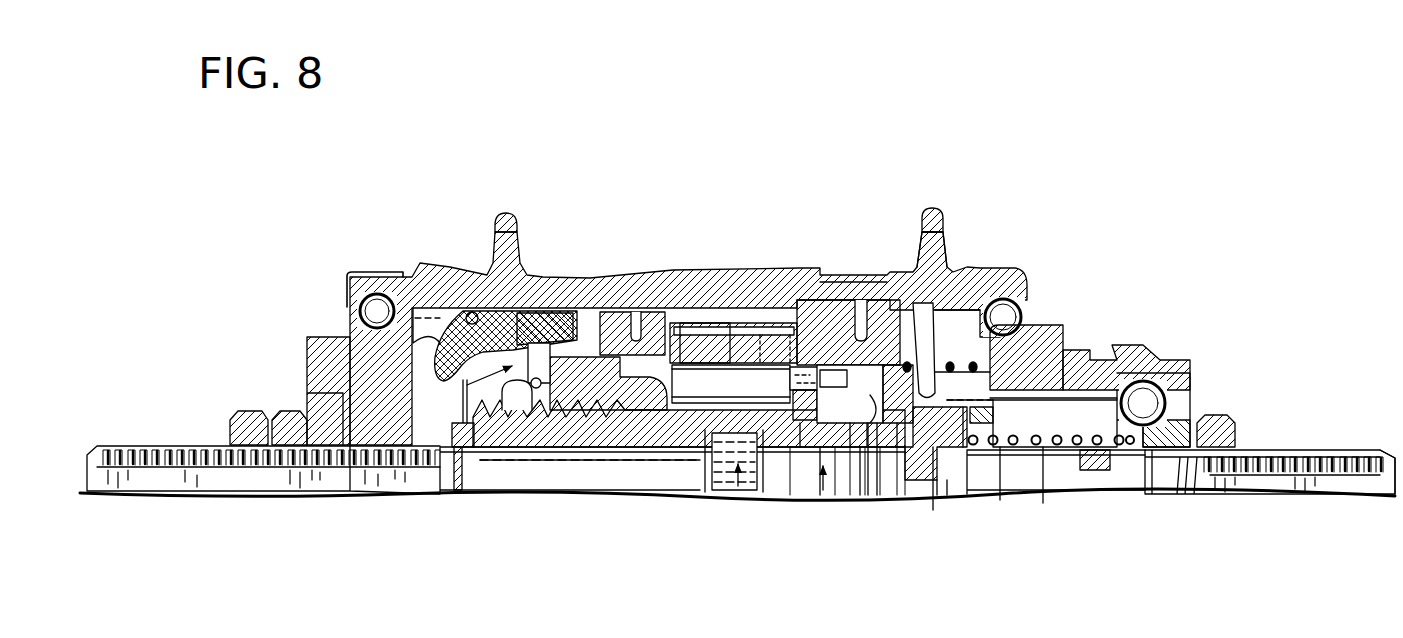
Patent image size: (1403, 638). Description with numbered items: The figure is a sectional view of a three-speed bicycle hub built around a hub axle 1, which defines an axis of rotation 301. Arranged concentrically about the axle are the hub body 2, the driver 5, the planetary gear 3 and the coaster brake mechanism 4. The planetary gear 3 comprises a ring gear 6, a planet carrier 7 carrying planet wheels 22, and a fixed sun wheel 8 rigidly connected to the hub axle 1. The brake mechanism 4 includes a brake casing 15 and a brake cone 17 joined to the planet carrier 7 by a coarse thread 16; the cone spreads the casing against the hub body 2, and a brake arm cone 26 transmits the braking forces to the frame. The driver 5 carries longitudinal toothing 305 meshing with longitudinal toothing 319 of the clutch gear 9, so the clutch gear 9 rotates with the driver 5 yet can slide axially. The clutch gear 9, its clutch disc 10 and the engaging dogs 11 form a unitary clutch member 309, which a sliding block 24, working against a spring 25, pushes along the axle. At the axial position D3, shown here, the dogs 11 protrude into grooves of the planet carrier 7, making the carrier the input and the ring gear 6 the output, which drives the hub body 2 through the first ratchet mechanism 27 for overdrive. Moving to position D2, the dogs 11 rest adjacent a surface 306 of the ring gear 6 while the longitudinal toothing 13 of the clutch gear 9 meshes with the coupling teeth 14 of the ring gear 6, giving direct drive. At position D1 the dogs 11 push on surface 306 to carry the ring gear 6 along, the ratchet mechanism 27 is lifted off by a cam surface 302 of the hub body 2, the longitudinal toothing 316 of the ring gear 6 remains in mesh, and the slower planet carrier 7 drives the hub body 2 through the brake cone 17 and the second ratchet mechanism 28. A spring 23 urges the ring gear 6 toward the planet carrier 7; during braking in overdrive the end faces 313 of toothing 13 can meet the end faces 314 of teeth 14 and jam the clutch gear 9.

The hub axle 1 is at (1162, 475).
The axis of rotation 301 is at (1393, 500).
The hub body 2 is at (987, 290).
The cam surface 302 is at (957, 290).
The planetary gear 3 is at (738, 488).
The coaster brake mechanism 4 is at (465, 380).
The driver 5 is at (1043, 337).
The longitudinal toothing of the driver 305 is at (1090, 400).
The ring gear 6 is at (737, 323).
The planet carrier 7 is at (667, 418).
The sun wheel 8 is at (705, 488).
The clutch gear 9 is at (867, 423).
The clutch disc 10 is at (808, 455).
The engaging dogs 11 is at (800, 425).
The longitudinal toothing of the clutch gear 13 is at (845, 423).
The coupling teeth of the ring gear 14 is at (897, 423).
The brake casing 15 is at (515, 322).
The coarse thread 16 is at (530, 385).
The brake cone 17 is at (567, 395).
The planet wheels 22 is at (743, 350).
The spring 23 is at (928, 387).
The sliding block 24 is at (935, 487).
The spring 25 is at (1063, 452).
The brake arm cone 26 is at (327, 377).
The first ratchet mechanism 27 is at (838, 307).
The second ratchet mechanism 28 is at (622, 318).
The surface of the ring gear 306 is at (868, 423).
The unitary clutch member 309 is at (820, 447).
The end faces of the clutch gear toothing 313 is at (860, 460).
The end faces of the clutch toothing 314 is at (877, 423).
The longitudinal toothing of the ring gear 316 is at (690, 323).
The longitudinal toothing of the clutch gear 319 is at (1033, 333).
The axial position for hill gear D1 is at (1043, 503).
The axial position for direct drive D2 is at (1000, 500).
The axial position for overdrive D3 is at (933, 510).